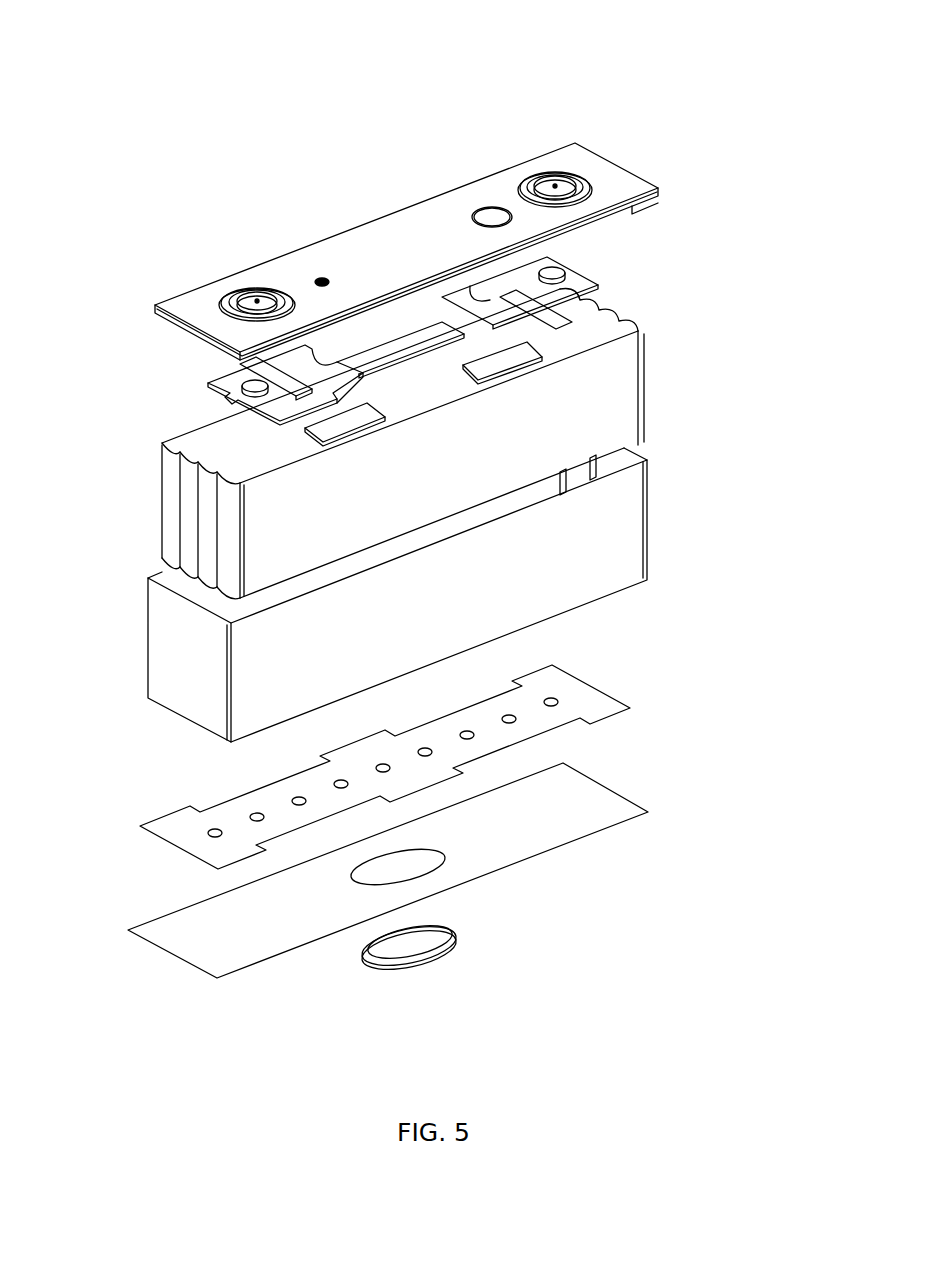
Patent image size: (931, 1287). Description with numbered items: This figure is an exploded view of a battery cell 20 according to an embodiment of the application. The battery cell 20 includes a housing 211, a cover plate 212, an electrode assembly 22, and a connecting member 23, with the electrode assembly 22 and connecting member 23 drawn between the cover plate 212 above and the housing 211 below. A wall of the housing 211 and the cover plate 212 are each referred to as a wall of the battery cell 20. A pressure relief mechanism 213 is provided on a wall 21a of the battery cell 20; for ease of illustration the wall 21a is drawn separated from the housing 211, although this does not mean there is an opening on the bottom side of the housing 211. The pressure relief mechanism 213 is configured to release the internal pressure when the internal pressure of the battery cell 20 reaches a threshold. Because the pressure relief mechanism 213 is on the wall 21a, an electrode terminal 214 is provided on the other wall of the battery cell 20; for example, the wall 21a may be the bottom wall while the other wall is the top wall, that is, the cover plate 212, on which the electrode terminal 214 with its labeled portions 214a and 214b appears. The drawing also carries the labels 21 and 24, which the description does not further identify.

The battery cell 20 is at (184, 105).
The housing 21 is at (575, 223).
The wall 21a is at (608, 790).
The housing 211 is at (190, 675).
The cover plate 212 is at (163, 320).
The pressure relief mechanism 213 is at (405, 965).
The electrode terminal 214 is at (473, 115).
The first terminal 214a is at (256, 302).
The second terminal 214b is at (556, 186).
The electrode assembly 22 is at (632, 330).
The connecting member 23 is at (577, 273).
The flexible circuit board 24 is at (600, 688).